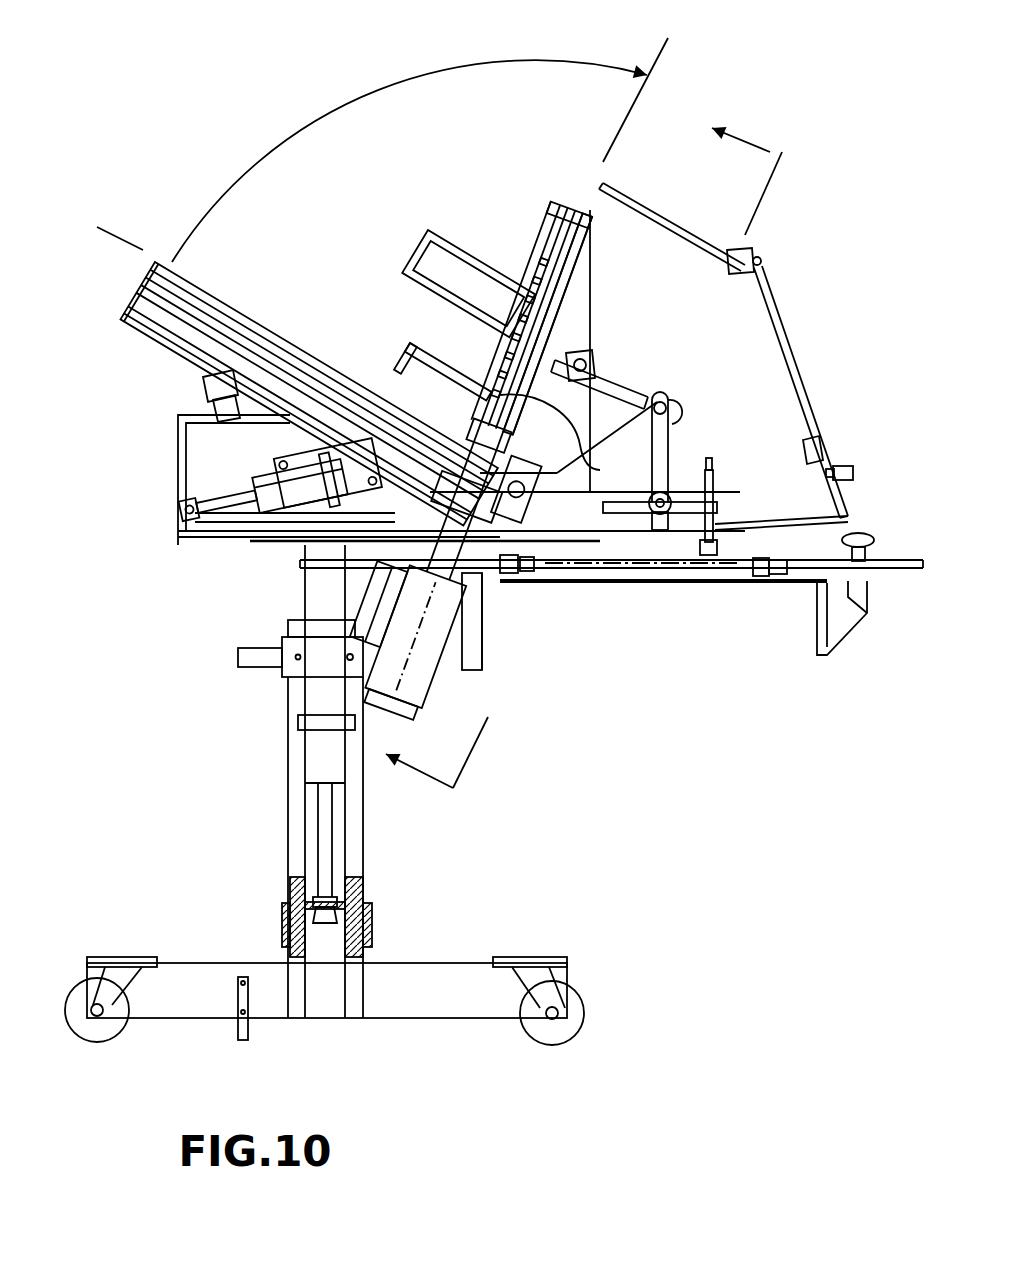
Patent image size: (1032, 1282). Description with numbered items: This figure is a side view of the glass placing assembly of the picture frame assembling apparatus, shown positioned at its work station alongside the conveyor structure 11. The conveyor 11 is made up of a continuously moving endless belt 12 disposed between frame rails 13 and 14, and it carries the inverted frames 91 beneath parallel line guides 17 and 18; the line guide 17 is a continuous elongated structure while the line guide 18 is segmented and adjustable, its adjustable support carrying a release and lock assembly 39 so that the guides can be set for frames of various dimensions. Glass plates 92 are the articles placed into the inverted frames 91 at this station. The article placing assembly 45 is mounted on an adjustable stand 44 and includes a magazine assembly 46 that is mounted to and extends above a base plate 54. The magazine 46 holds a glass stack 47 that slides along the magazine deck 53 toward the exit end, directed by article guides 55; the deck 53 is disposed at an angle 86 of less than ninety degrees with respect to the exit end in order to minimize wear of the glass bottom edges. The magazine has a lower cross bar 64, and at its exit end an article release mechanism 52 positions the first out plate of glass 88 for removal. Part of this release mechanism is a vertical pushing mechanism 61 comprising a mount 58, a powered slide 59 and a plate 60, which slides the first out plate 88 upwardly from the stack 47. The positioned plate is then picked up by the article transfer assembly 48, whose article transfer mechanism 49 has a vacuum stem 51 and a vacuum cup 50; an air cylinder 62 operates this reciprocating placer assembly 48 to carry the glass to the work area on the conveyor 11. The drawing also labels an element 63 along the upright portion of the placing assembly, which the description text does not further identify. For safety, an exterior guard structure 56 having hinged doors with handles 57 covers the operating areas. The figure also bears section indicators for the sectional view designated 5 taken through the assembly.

The section line 5- 5 is at (584, 463).
The conveyor structure 11 is at (680, 583).
The endless belt 12 is at (572, 572).
The frame rail 13 is at (468, 626).
The frame rail 14 is at (820, 612).
The line guide 17 is at (537, 575).
The line guide 18 is at (760, 576).
The release and lock assembly 39 is at (866, 532).
The adjustable stand 44 is at (276, 769).
The article placing assembly 45 is at (478, 226).
The magazine assembly 46 is at (322, 335).
The glass stack 47 is at (506, 364).
The article transfer assembly 48 is at (656, 390).
The article transfer mechanism 49 is at (542, 376).
The vacuum cup 50 is at (714, 548).
The vacuum stem 51 is at (705, 490).
The article release mechanism 52 is at (580, 300).
The magazine deck 53 is at (181, 366).
The base plate 54 is at (268, 546).
The article guides 55 is at (148, 246).
The exterior guard structure 56 is at (775, 285).
The handles 57 is at (848, 465).
The mount 58 is at (428, 683).
The powered slide 59 is at (392, 706).
The plate 60 is at (402, 630).
The vertical pushing mechanism 61 is at (478, 432).
The air cylinder 62 is at (300, 476).
The carriage 63 is at (565, 203).
The lower cross bar 64 is at (472, 518).
The angle 86 is at (440, 62).
The first out plate of glass 88 is at (600, 470).
The inverted frames 91 is at (626, 584).
The glass plates 92 is at (605, 565).